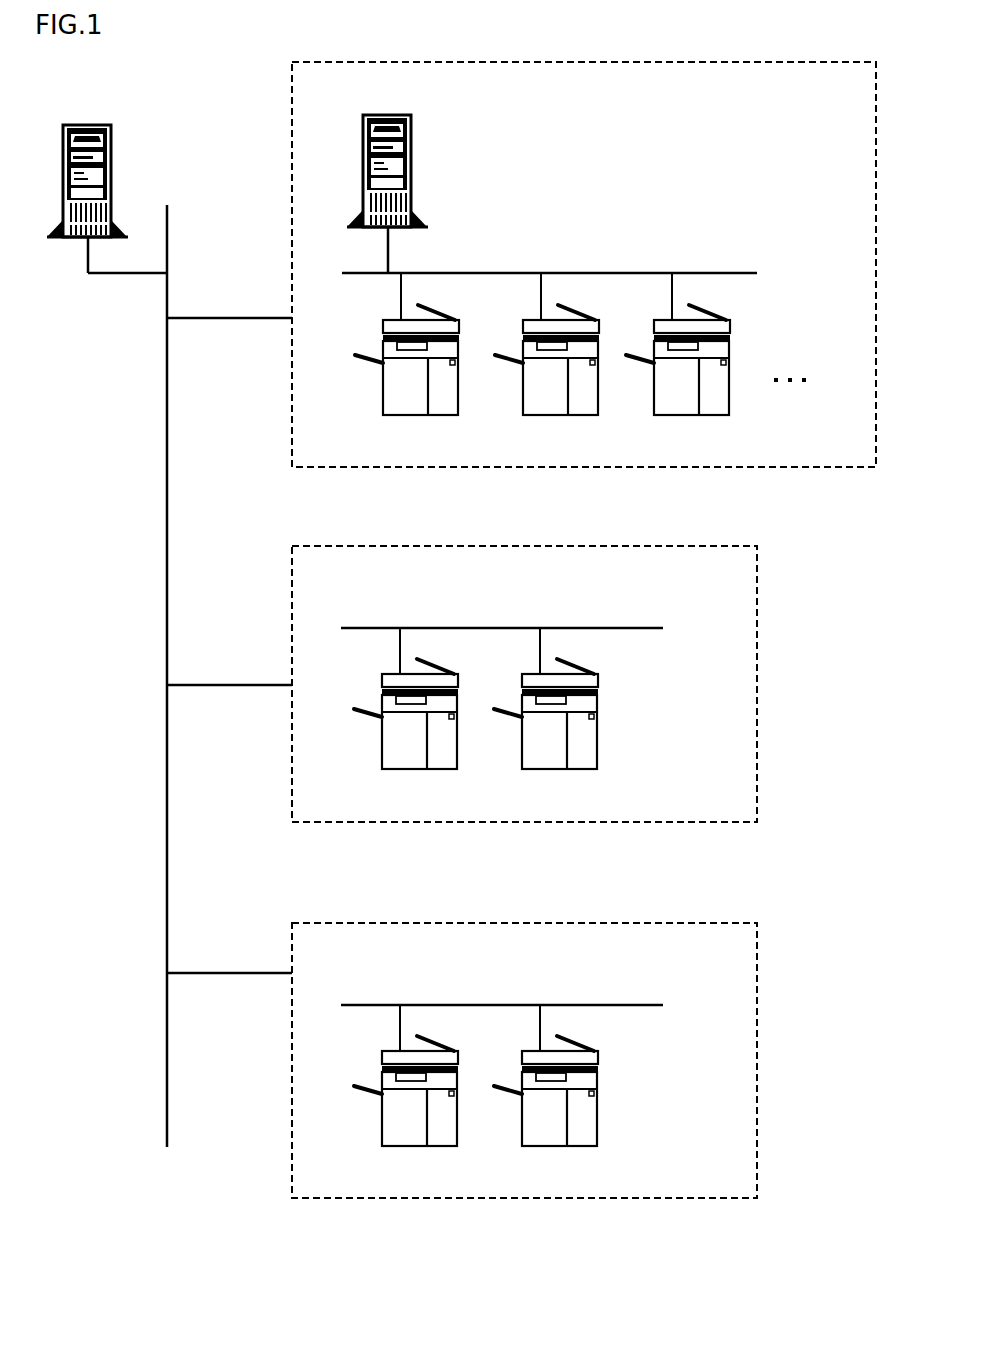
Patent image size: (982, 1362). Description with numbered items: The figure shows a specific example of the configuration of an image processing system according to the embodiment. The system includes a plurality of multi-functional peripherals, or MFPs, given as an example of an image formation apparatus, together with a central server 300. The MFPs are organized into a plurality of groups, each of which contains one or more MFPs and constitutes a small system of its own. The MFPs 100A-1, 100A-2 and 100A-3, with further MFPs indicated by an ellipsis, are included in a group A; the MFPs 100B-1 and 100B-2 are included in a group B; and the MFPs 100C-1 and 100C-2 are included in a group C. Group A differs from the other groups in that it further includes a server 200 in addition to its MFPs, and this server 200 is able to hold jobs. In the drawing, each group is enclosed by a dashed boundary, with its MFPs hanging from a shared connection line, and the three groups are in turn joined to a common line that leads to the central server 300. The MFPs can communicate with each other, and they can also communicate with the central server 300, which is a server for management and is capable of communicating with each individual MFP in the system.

The central server 300 is at (100, 123).
The server 200 is at (400, 115).
The group A is at (584, 253).
The group B is at (524, 674).
The group C is at (524, 1050).
The multi-functional peripheral 100A-1 is at (393, 417).
The multi-functional peripheral 100A-2 is at (533, 417).
The multi-functional peripheral 100A-3 is at (664, 417).
The multi-functional peripheral 100B-1 is at (392, 771).
The multi-functional peripheral 100B-2 is at (532, 771).
The multi-functional peripheral 100C-1 is at (392, 1148).
The multi-functional peripheral 100C-2 is at (532, 1148).